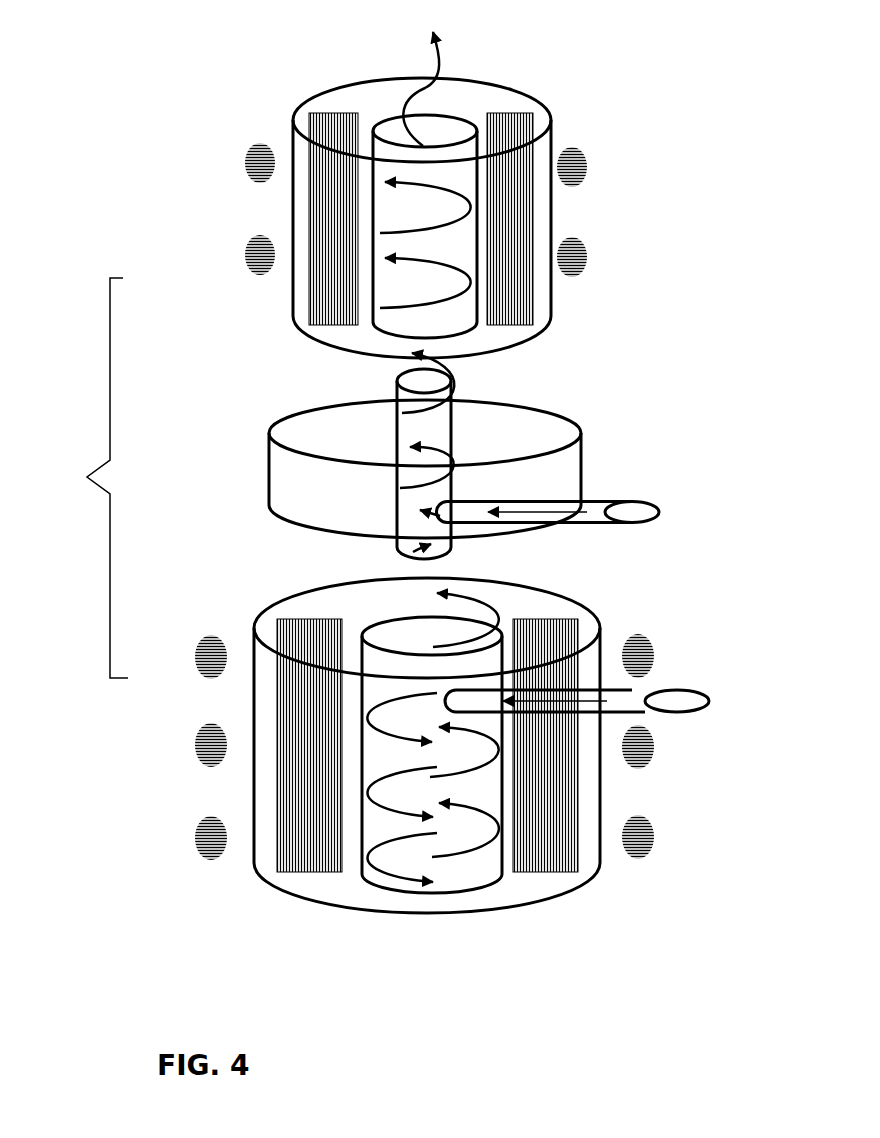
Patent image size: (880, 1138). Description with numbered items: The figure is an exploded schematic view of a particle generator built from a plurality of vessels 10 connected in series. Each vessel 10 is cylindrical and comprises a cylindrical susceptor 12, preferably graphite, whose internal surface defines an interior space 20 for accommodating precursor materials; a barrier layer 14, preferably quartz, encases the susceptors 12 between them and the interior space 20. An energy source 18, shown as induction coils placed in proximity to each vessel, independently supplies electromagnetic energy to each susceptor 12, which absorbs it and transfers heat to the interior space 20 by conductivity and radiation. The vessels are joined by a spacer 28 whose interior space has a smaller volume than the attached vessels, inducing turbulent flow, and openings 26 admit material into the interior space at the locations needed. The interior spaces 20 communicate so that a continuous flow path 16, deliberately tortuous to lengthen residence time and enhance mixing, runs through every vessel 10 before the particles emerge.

The vessel 10 is at (622, 133).
The susceptor 12 is at (331, 120).
The barrier layer 14 is at (365, 120).
The continuous flow path 16 is at (438, 89).
The energy source 18 is at (262, 165).
The interior space 20 is at (425, 632).
The openings 26 is at (643, 515).
The spacer 28 is at (622, 432).